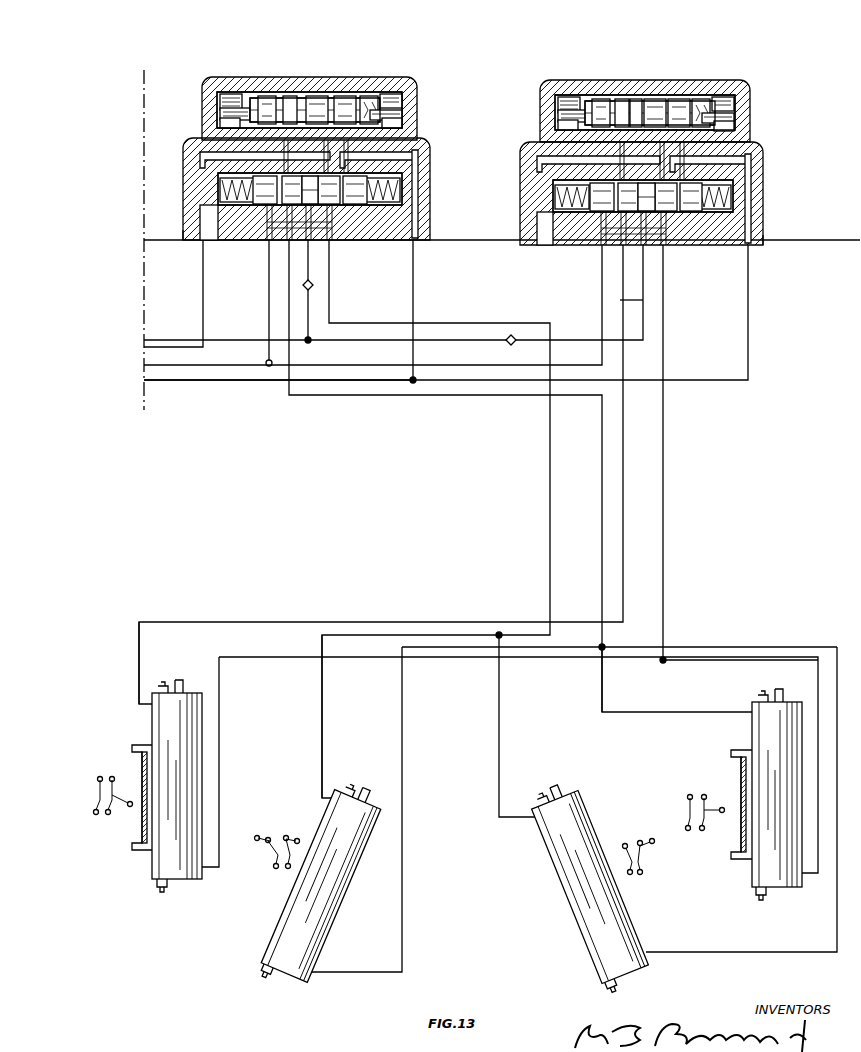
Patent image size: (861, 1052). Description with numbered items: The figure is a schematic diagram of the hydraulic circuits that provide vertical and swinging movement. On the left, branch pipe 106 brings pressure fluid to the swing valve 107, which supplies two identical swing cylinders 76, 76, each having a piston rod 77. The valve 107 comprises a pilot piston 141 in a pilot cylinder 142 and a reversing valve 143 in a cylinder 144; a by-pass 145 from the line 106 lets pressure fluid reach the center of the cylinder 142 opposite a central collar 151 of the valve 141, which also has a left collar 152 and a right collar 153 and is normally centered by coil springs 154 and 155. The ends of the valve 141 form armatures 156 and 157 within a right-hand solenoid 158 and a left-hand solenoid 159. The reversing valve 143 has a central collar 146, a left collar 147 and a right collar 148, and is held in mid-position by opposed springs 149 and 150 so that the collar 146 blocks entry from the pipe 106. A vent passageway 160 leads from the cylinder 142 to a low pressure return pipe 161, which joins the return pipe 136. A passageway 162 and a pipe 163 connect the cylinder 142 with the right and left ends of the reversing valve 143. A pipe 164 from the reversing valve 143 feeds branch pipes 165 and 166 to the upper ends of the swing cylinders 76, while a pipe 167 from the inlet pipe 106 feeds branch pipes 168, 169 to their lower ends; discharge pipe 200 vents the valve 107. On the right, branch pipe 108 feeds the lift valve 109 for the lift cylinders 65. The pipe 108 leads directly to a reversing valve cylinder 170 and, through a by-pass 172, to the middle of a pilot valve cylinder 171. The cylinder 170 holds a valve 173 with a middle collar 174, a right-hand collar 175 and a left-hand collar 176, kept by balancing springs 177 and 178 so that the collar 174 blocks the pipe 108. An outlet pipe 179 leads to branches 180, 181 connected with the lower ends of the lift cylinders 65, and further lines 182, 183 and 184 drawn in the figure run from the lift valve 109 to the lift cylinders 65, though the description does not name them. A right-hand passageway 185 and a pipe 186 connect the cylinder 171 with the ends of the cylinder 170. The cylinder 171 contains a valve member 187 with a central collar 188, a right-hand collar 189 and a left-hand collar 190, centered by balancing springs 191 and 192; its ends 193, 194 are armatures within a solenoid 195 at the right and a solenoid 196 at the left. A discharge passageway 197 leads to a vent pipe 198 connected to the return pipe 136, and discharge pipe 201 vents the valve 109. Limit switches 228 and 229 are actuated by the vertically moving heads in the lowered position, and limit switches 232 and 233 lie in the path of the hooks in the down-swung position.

The vertical hydraulic pressure cylinder 65 is at (202, 750).
The rocking hydraulic cylinder 76 is at (358, 858).
The piston rod 77 is at (362, 787).
The branch pipe 106 is at (308, 300).
The swing valve 107 is at (428, 226).
The branch pipe 108 is at (643, 304).
The lift valve 109 is at (763, 240).
The return pipe 136 is at (198, 380).
The pilot piston 141 is at (300, 100).
The pilot cylinder 142 is at (290, 96).
The reversing valve 143 is at (360, 204).
The cylinder 144 is at (260, 204).
The by-pass 145 is at (200, 212).
The central collar 146 is at (330, 204).
The left collar 147 is at (290, 204).
The right collar 148 is at (355, 200).
The spring 149 is at (224, 200).
The spring 150 is at (394, 196).
The central collar 151 is at (320, 100).
The left collar 152 is at (275, 96).
The right collar 153 is at (370, 102).
The coil spring 154 is at (222, 123).
The coil spring 155 is at (403, 124).
The armature 156 is at (221, 91).
The armature 157 is at (390, 112).
The right-hand solenoid 158 is at (400, 95).
The left-hand solenoid 159 is at (230, 107).
The vent passageway 160 is at (345, 98).
The low pressure return pipe 161 is at (413, 298).
The passageway 162 is at (418, 158).
The pipe 163 is at (200, 150).
The pipe 164 is at (474, 310).
The branch pipe 165 is at (322, 690).
The branch pipe 166 is at (499, 740).
The pipe 167 is at (350, 396).
The branch pipe 168 is at (472, 647).
The branch pipe 169 is at (748, 647).
The reversing valve cylinder 170 is at (740, 218).
The pilot valve cylinder 171 is at (630, 104).
The by-pass 172 is at (538, 218).
The valve 173 is at (664, 211).
The middle collar 174 is at (628, 211).
The right-hand collar 175 is at (692, 211).
The left-hand collar 176 is at (598, 211).
The balancing spring 177 is at (560, 198).
The balancing spring 178 is at (730, 202).
The outlet pipe 179 is at (663, 340).
The branch 180 is at (705, 660).
The branch 181 is at (265, 657).
The line 182 is at (623, 576).
The line 183 is at (602, 686).
The line 184 is at (139, 655).
The right-hand passageway 185 is at (752, 158).
The pipe 186 is at (562, 128).
The valve member 187 is at (678, 102).
The central collar 188 is at (655, 102).
The right-hand collar 189 is at (700, 104).
The left-hand collar 190 is at (620, 100).
The balancing spring 191 is at (732, 104).
The balancing spring 192 is at (605, 100).
The armature end 193 is at (722, 117).
The armature end 194 is at (560, 105).
The solenoid 195 is at (735, 127).
The solenoid 196 is at (560, 122).
The discharge passageway 197 is at (636, 100).
The vent pipe 198 is at (748, 306).
The discharge pipe 200 is at (269, 312).
The discharge pipe 201 is at (602, 312).
The limit switch 228 is at (106, 812).
The limit switch 229 is at (700, 828).
The limit switch 232 is at (285, 866).
The limit switch 233 is at (625, 872).